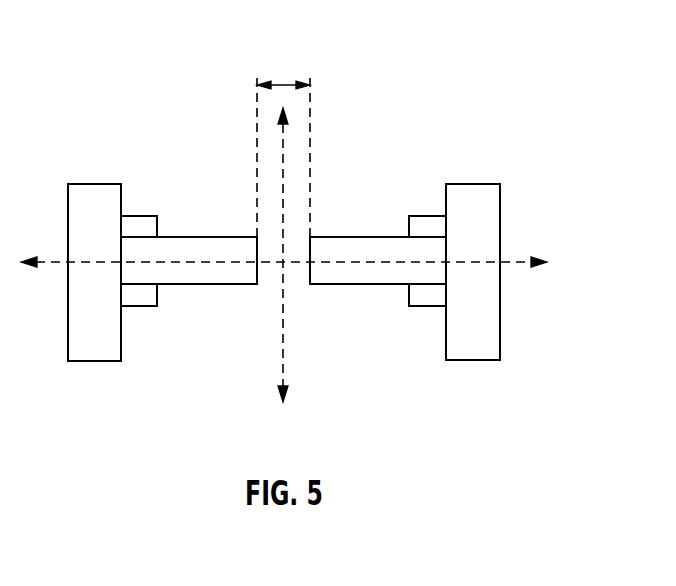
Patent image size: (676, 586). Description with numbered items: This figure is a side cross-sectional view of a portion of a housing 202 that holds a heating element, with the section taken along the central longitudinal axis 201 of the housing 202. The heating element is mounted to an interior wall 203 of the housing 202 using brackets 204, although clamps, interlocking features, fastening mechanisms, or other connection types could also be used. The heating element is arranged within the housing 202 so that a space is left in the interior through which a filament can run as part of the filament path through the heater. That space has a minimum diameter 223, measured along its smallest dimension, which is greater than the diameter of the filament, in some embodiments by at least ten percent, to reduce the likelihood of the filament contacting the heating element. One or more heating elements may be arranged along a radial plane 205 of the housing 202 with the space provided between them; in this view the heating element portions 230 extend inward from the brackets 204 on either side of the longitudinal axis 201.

The central longitudinal axis 201 is at (283, 365).
The housing 202 is at (94, 184).
The interior wall 203 is at (445, 333).
The bracket 204 is at (143, 216).
The radial plane 205 is at (513, 258).
The minimum diameter 223 is at (285, 82).
The shaft 230 is at (213, 284).